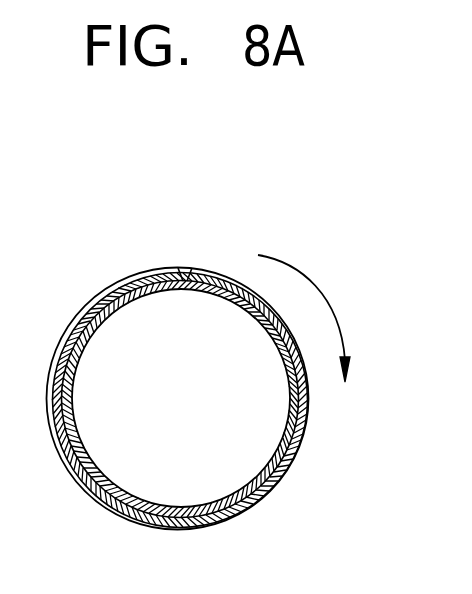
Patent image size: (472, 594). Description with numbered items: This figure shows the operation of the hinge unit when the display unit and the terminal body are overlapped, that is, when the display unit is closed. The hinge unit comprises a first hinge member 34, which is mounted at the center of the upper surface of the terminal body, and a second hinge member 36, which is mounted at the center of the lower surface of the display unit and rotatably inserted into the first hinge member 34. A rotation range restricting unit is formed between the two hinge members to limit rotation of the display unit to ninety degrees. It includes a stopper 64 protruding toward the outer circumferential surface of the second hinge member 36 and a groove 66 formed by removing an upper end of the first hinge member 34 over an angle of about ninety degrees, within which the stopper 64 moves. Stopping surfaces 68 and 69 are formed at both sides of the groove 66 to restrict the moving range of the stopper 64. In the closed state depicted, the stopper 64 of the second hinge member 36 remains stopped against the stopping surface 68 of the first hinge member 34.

The first hinge member 34 is at (280, 450).
The second hinge member 36 is at (262, 500).
The stopper 64 is at (192, 268).
The groove 66 is at (240, 287).
The stopping surface 68 is at (178, 268).
The stopping surface 69 is at (305, 411).